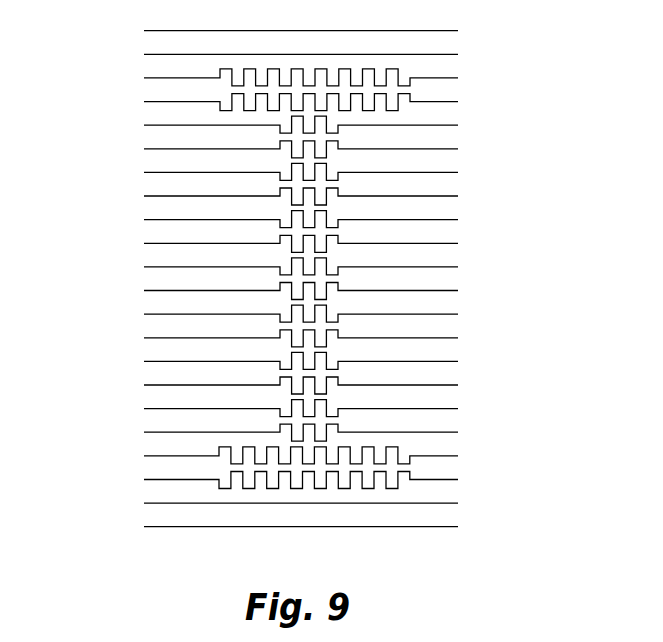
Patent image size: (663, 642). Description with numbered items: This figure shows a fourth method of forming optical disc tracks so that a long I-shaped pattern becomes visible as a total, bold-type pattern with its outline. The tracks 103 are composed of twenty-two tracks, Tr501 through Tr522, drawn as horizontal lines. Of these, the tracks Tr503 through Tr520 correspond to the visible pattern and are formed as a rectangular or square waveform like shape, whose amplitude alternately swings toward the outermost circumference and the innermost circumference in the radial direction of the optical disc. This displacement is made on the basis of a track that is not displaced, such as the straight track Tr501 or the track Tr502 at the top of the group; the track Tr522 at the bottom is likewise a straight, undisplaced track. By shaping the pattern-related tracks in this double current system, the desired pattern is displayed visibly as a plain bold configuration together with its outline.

The track Tr501 is at (460, 31).
The track Tr502 is at (460, 54).
The track Tr503 is at (460, 78).
The track Tr520 is at (460, 480).
The track Tr522 is at (458, 527).
The tracks 103 is at (74, 286).